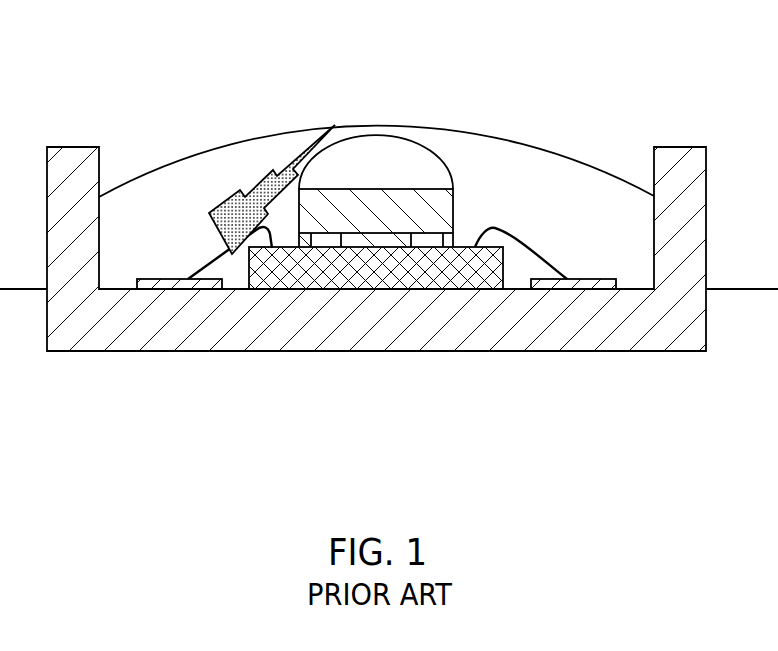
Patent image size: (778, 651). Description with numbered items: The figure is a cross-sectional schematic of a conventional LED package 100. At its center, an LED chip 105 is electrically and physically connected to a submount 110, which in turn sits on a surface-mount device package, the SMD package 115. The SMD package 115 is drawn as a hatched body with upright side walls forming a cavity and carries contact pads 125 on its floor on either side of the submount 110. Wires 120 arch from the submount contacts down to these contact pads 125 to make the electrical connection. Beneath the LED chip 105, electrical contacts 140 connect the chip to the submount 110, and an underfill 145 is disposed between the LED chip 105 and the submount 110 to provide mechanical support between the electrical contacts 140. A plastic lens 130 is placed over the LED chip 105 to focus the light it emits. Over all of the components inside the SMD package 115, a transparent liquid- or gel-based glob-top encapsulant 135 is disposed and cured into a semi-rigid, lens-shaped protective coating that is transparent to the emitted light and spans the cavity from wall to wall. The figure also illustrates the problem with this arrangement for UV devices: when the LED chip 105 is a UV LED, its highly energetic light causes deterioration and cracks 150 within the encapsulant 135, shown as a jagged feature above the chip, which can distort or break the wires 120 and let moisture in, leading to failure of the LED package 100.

The LED package 100 is at (389, 212).
The LED chip 105 is at (393, 245).
The submount 110 is at (490, 284).
The SMD package 115 is at (599, 339).
The wires 120 is at (208, 258).
The contact pads 125 is at (147, 278).
The plastic lens 130 is at (387, 150).
The encapsulant 135 is at (226, 142).
The electrical contacts 140 is at (297, 248).
The underfill 145 is at (373, 248).
The cracks 150 is at (296, 143).